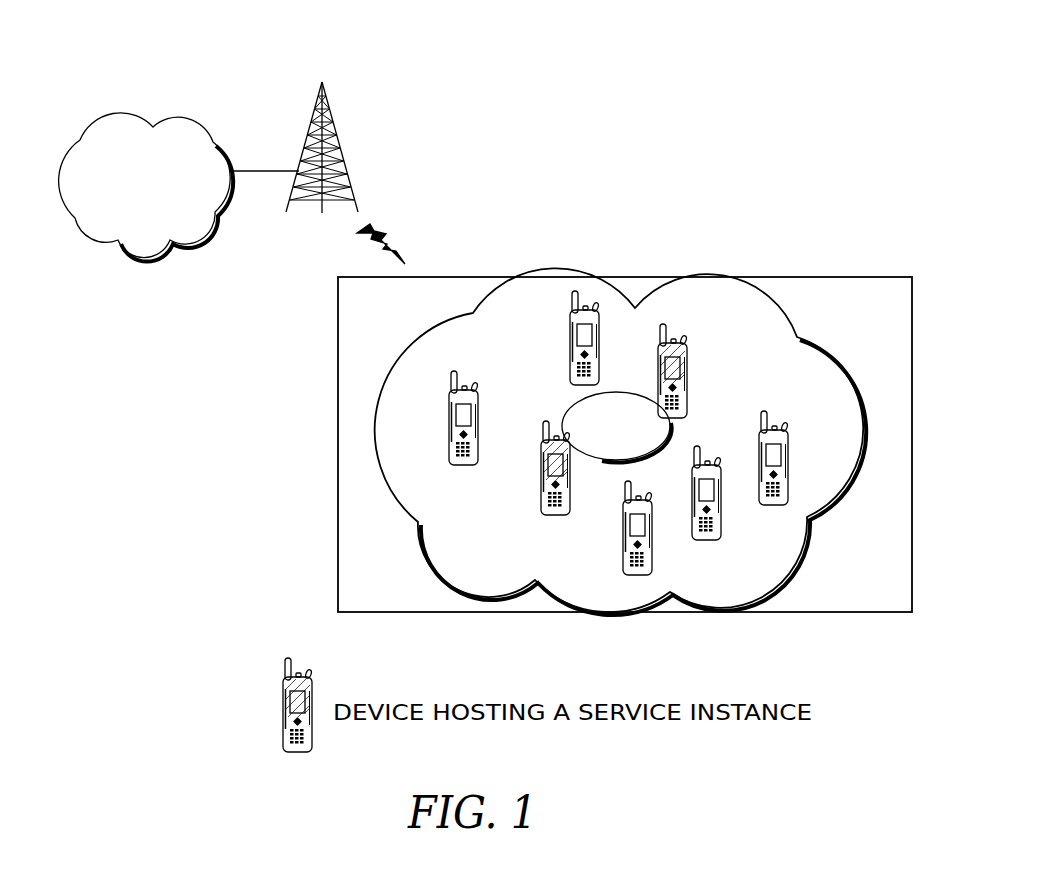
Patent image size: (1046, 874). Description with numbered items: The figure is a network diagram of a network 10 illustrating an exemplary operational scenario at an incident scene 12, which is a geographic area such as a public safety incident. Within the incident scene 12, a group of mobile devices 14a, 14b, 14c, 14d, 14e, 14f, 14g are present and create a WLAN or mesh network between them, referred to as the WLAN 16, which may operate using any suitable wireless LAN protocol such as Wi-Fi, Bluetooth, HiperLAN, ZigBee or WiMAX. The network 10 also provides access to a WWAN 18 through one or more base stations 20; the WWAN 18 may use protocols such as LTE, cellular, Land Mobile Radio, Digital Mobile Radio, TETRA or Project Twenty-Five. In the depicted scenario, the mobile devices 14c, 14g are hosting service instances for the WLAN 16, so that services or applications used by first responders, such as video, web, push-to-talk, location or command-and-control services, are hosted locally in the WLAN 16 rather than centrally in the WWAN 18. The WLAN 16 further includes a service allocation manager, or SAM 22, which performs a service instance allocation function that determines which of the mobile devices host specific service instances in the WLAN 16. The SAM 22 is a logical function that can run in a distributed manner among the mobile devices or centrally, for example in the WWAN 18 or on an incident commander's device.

The network 10 is at (120, 47).
The incident scene 12 is at (826, 277).
The mobile device 14a is at (449, 432).
The mobile device 14b is at (583, 309).
The mobile device 14c is at (672, 342).
The mobile device 14d is at (775, 430).
The mobile device 14e is at (706, 539).
The mobile device 14f is at (637, 574).
The mobile device 14g is at (541, 497).
The WLAN 16 is at (818, 338).
The WWAN 18 is at (188, 113).
The base station 20 is at (343, 157).
The service allocation manager (SAM) 22 is at (572, 398).